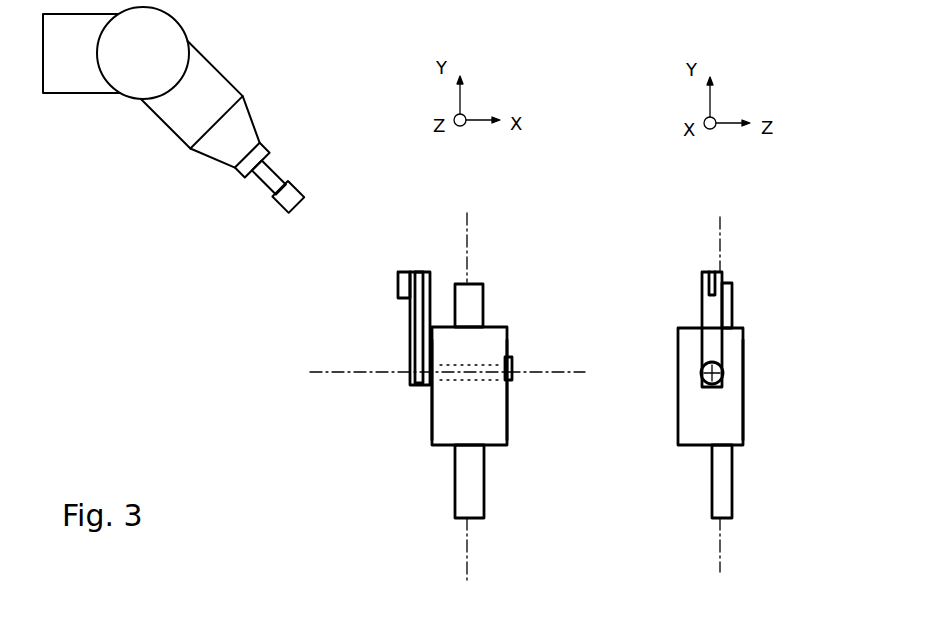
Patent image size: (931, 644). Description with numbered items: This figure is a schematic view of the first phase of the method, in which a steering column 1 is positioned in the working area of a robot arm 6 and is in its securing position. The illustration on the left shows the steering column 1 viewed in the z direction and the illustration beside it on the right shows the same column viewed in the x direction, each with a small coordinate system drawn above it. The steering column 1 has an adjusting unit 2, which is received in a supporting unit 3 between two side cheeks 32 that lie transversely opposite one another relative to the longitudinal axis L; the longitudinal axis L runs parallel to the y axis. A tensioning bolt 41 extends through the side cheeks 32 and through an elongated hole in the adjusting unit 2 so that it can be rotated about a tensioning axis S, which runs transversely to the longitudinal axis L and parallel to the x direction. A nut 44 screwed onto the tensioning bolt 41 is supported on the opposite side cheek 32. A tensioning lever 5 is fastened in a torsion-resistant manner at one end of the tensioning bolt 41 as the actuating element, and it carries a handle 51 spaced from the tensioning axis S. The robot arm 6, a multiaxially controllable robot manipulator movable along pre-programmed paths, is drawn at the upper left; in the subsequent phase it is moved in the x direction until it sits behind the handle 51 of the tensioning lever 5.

The steering column 1 is at (529, 251).
The adjusting unit 2 is at (470, 488).
The supporting unit 3 is at (452, 433).
The side cheeks 32 is at (432, 415).
The tensioning bolt 41 is at (467, 375).
The nut 44 is at (510, 365).
The tensioning lever 5 is at (421, 340).
The handle 51 is at (406, 288).
The robot arm 6 is at (277, 175).
The tensioning axis S is at (562, 372).
The longitudinal axis L is at (470, 547).